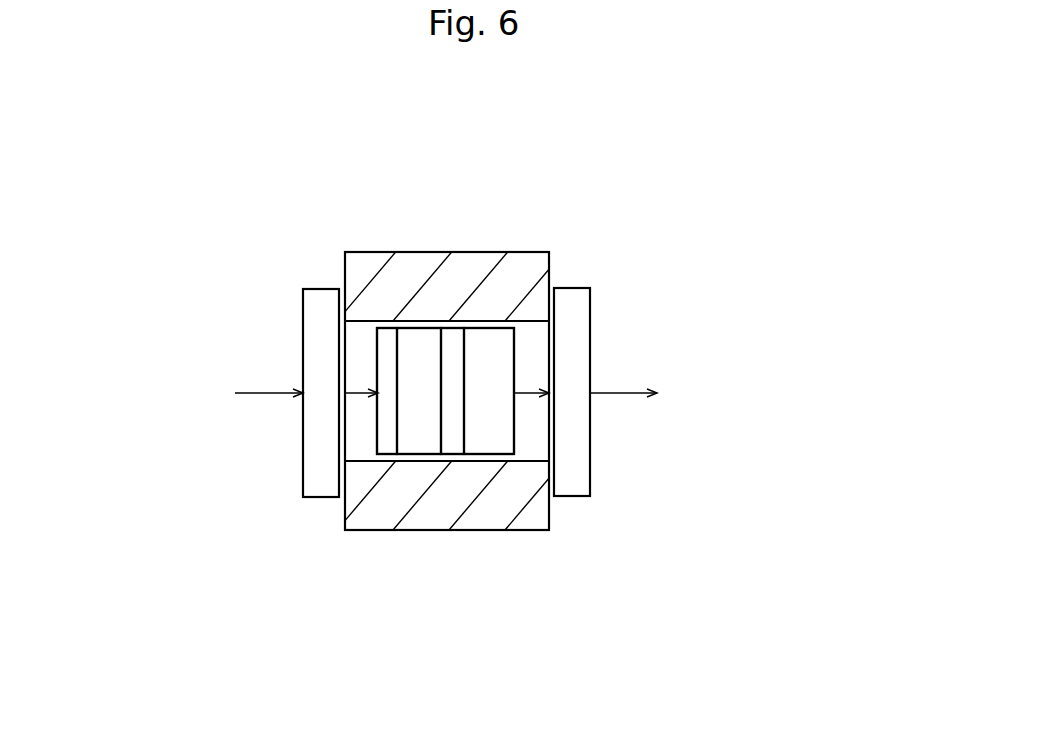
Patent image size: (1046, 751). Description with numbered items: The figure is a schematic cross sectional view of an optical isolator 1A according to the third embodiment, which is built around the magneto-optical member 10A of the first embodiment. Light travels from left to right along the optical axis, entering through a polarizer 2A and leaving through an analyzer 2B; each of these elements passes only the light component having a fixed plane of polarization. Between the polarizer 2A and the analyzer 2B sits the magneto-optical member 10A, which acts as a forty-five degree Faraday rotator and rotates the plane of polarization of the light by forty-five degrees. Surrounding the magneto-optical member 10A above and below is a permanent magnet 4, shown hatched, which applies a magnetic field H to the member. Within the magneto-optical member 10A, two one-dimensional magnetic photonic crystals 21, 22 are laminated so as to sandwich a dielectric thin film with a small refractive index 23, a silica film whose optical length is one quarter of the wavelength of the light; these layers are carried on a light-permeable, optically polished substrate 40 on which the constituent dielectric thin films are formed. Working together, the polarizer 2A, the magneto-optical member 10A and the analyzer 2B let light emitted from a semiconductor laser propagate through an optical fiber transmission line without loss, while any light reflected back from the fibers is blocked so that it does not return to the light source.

The optical isolator 1A is at (580, 203).
The permanent magnet 4 is at (367, 268).
The polarizer 2A is at (323, 485).
The analyzer 2B is at (574, 482).
The magneto-optical member 10A is at (521, 440).
The substrate 40 is at (387, 447).
The one-dimensional magnetic photonic crystal 21 is at (418, 442).
The dielectric thin film with a small refractive index 23 is at (453, 445).
The one-dimensional magnetic photonic crystal 22 is at (490, 442).